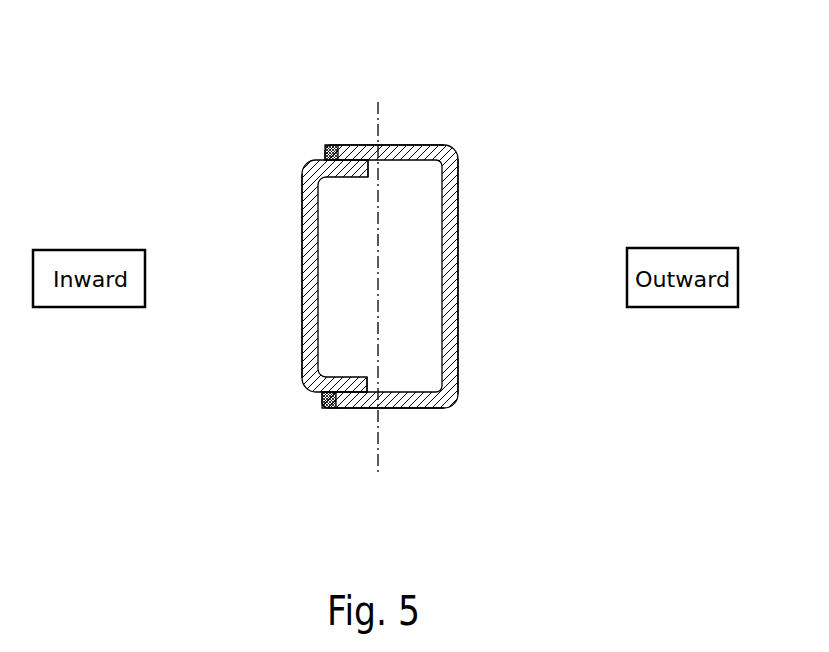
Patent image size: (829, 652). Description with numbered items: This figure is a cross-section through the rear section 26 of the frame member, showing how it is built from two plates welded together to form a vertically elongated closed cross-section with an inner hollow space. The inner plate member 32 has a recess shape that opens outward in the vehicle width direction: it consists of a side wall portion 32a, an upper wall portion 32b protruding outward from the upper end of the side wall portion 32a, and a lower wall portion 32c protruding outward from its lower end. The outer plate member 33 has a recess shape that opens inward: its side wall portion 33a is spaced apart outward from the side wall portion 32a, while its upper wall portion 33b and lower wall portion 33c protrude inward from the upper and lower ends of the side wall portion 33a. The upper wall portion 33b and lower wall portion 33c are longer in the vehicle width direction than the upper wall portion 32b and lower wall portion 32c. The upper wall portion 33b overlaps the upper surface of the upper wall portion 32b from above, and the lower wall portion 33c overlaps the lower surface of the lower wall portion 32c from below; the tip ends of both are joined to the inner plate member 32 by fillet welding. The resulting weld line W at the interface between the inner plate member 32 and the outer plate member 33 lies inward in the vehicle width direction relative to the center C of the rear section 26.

The rear section 26 is at (485, 142).
The inner plate member 32 is at (300, 222).
The side wall portion 32a is at (300, 300).
The upper wall portion 32b is at (355, 145).
The lower wall portion 32c is at (343, 408).
The outer plate member 33 is at (458, 240).
The side wall portion 33a is at (458, 295).
The upper wall portion 33b is at (412, 145).
The lower wall portion 33c is at (415, 408).
The weld line W is at (327, 147).
The center C is at (378, 445).